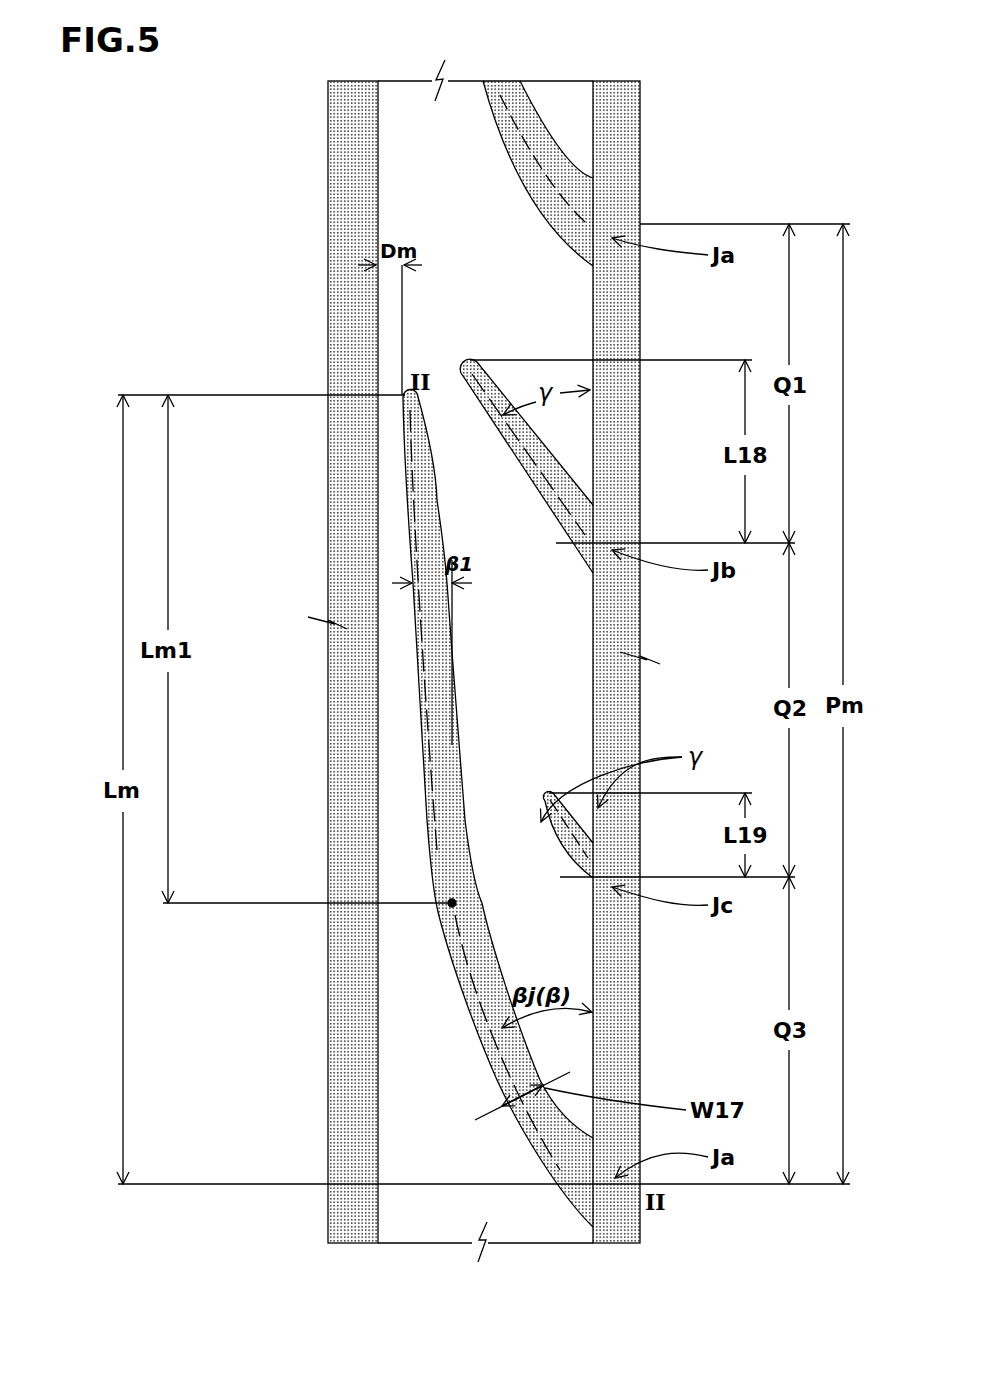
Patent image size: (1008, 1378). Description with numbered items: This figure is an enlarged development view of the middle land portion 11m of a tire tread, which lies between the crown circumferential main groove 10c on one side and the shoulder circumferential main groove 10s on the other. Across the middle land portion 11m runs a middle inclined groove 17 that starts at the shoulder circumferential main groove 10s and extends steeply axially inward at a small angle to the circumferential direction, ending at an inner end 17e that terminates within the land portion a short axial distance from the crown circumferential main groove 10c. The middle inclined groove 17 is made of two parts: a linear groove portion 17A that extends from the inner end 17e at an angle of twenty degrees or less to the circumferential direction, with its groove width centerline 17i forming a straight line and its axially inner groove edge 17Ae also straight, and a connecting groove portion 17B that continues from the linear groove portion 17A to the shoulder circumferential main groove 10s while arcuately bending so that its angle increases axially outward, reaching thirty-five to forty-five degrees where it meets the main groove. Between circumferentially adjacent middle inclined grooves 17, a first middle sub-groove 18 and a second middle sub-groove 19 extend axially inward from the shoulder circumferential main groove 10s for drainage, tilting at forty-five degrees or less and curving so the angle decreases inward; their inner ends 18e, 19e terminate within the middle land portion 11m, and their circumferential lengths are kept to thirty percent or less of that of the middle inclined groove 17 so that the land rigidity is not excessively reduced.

The crown circumferential main groove 10c is at (360, 1218).
The shoulder circumferential main groove 10s is at (618, 1222).
The middle land portion 11m is at (593, 1277).
The middle inclined groove 17 is at (389, 809).
The linear groove portion 17A is at (425, 835).
The connecting groove portion 17B is at (468, 1030).
The inner end 17e is at (398, 403).
The groove width centerline 17i is at (420, 527).
The groove inner edge 17Ae is at (420, 683).
The first middle sub-groove 18 is at (557, 537).
The inner end of first middle sub-groove 18e is at (462, 360).
The second middle sub-groove 19 is at (565, 860).
The inner end of second middle sub-groove 19e is at (552, 790).